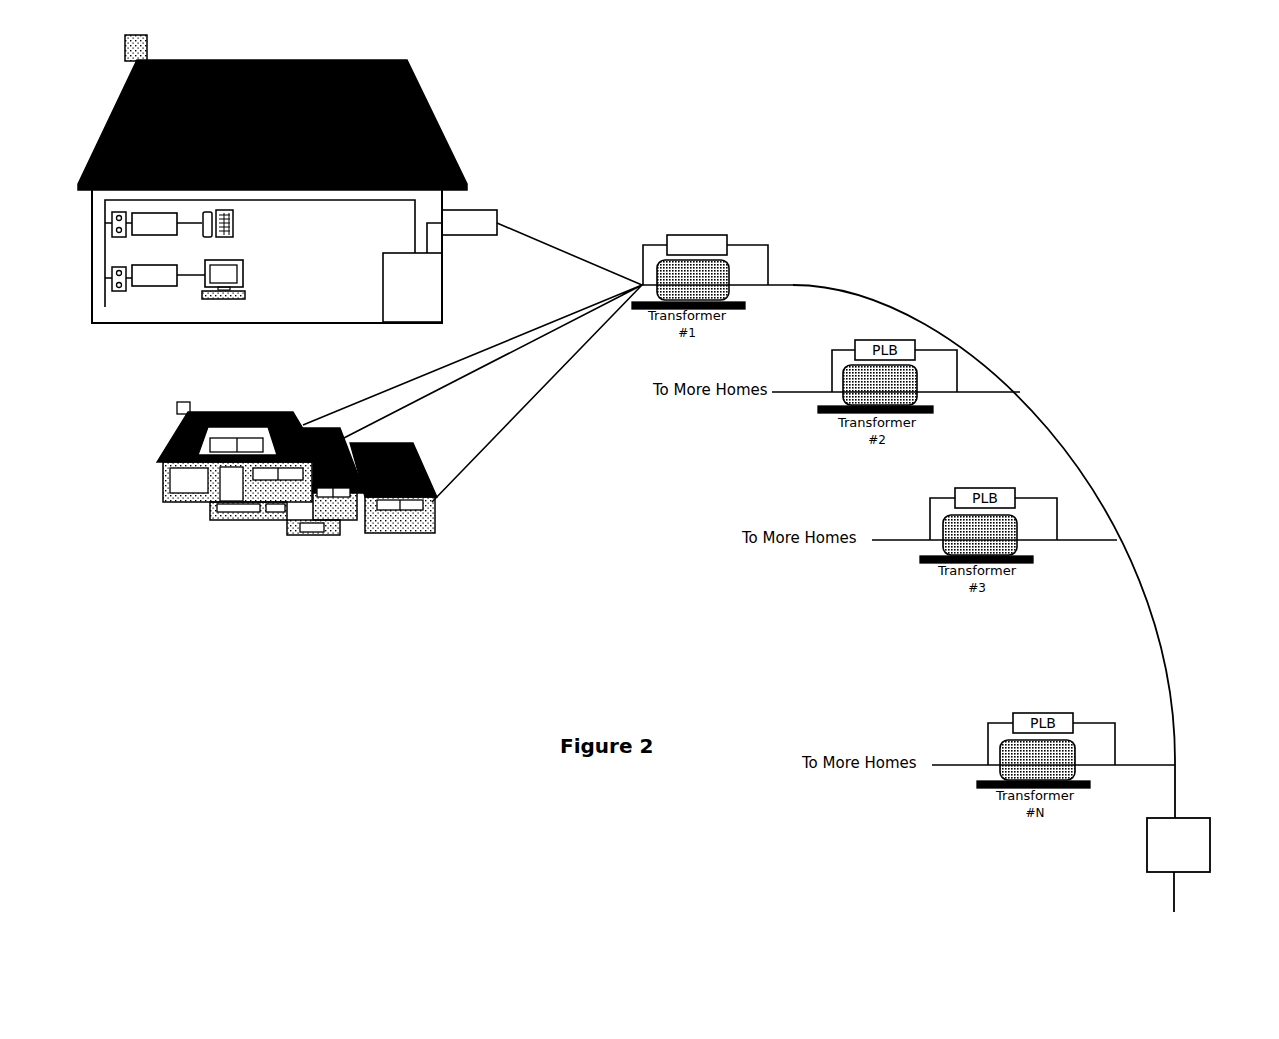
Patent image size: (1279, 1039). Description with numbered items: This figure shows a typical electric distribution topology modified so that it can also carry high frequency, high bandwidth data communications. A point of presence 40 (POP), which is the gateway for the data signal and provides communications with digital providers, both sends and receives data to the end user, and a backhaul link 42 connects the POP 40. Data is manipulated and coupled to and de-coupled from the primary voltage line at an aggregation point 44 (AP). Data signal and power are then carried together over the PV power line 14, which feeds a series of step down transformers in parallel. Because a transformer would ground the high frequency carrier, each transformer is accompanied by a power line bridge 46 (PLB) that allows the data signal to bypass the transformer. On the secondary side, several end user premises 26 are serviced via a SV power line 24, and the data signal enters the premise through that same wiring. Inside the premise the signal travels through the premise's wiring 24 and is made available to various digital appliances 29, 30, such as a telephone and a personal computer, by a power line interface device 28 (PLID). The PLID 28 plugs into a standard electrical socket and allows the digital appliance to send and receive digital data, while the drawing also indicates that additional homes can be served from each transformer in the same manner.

The PV power line 14 is at (1165, 692).
The SV power line 24 is at (545, 240).
The end user premises 26 is at (447, 143).
The power line interface device 28 is at (160, 286).
The digital appliance 29 is at (234, 227).
The digital appliance 30 is at (244, 275).
The point of presence 40 is at (1208, 925).
The backhaul link 42 is at (1174, 895).
The aggregation point 44 is at (1185, 818).
The power line bridge 46 is at (687, 235).